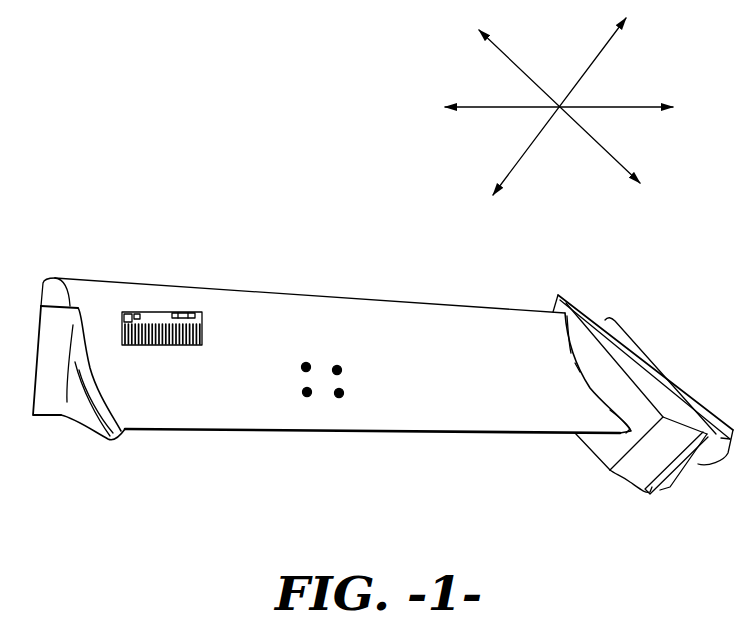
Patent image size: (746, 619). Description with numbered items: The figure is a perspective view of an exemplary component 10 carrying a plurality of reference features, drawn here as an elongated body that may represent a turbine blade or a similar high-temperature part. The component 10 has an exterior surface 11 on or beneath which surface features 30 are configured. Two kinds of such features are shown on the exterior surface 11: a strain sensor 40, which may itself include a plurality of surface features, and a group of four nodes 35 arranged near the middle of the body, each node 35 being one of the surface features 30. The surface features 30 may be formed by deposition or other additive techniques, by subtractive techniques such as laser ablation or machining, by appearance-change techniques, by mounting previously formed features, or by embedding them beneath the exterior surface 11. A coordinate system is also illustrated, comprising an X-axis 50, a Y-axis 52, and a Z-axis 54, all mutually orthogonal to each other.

The component 10 is at (107, 242).
The exterior surface 11 is at (393, 330).
The surface feature 30 is at (171, 348).
The node 35 is at (302, 357).
The strain sensor 40 is at (153, 315).
The X-axis 50 is at (508, 57).
The Y-axis 52 is at (618, 107).
The Z-axis 54 is at (593, 58).